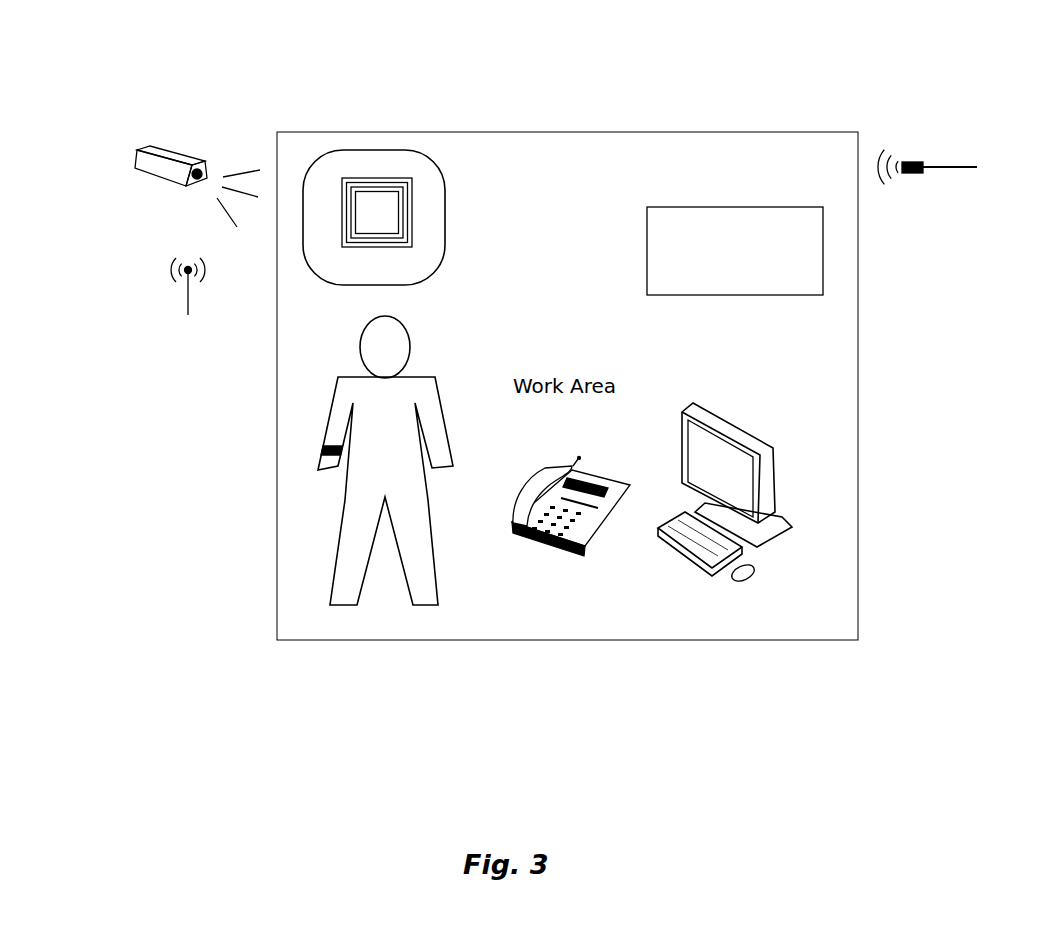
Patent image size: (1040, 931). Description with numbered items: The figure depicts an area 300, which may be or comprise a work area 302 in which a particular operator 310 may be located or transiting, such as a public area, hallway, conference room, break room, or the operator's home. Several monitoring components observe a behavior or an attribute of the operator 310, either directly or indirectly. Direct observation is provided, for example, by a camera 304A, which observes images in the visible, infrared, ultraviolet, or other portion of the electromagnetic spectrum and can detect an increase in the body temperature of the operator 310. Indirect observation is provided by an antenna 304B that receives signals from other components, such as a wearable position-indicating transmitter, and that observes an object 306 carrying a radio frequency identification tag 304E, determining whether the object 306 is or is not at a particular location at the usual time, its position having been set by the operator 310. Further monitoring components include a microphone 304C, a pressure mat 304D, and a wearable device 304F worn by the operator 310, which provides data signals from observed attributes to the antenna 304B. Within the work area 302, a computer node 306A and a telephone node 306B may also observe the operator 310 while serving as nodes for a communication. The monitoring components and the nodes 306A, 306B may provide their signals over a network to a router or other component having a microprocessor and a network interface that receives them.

The area 300 is at (928, 87).
The work area 302 is at (587, 219).
The camera 304A is at (177, 153).
The antenna 304B is at (186, 290).
The microphone 304C is at (943, 168).
The pressure mat 304D is at (823, 243).
The radio frequency identification tag 304E is at (380, 178).
The object 306 is at (444, 180).
The node 306A is at (757, 483).
The node 306B is at (583, 551).
The operator 310 is at (342, 395).
The wearable device 304F is at (322, 450).